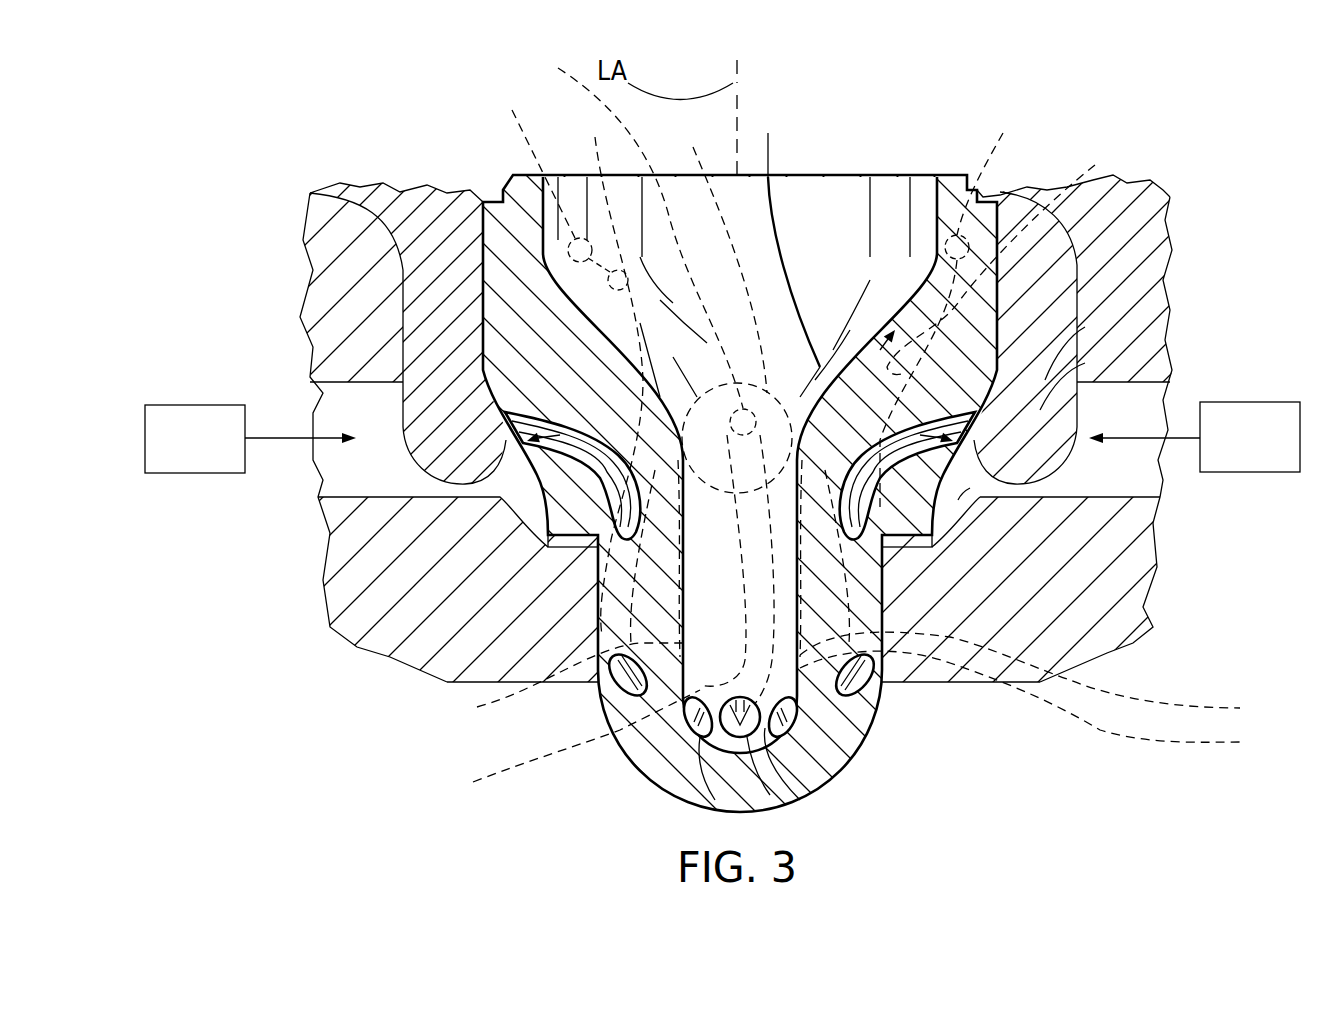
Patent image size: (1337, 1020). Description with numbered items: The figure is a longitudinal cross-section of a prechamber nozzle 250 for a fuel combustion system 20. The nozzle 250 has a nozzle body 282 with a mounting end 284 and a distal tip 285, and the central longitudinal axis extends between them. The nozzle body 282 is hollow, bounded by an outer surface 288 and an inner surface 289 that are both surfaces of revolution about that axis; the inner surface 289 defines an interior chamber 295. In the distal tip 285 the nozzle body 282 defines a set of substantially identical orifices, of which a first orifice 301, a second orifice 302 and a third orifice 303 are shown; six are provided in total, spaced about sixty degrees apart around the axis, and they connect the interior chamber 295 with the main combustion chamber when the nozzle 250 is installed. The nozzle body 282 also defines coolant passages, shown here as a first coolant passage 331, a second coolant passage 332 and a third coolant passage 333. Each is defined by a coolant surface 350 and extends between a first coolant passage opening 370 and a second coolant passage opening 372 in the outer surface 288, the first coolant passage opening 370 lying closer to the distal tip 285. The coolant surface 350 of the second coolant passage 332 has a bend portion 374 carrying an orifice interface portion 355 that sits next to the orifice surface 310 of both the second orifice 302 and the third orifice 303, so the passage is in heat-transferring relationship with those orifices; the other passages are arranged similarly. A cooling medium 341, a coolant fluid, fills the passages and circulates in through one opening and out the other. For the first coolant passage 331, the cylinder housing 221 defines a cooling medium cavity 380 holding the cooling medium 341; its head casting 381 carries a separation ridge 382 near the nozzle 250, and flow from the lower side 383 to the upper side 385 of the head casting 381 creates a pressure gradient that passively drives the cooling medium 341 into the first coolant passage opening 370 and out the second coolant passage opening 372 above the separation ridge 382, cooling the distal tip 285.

The fuel combustion system 20 is at (313, 165).
The nozzle 250 is at (517, 175).
The nozzle body 282 is at (517, 305).
The mounting end 284 is at (945, 175).
The cylinder housing 221 is at (1147, 282).
The inner surface 289 is at (765, 236).
The interior chamber 295 is at (706, 569).
The third coolant passage 333 is at (520, 433).
The cooling medium cavity 380 is at (965, 492).
The head casting 381 is at (1085, 327).
The separation ridge 382 is at (1085, 363).
The lower side 383 is at (970, 488).
The first coolant passage opening 370 is at (1247, 583).
The second coolant passage opening 372 is at (756, 299).
The coolant surface 350 is at (1228, 238).
The second coolant passage 332 is at (731, 305).
The upper side 385 is at (1029, 188).
The first coolant passage 331 is at (1000, 345).
The cooling medium 341 is at (196, 447).
The bend portion 374 is at (640, 700).
The orifice interface portion 355 is at (856, 726).
The orifice surface 310 is at (680, 735).
The third orifice 303 is at (715, 733).
The second orifice 302 is at (748, 725).
The first orifice 301 is at (818, 800).
The outer surface 288 is at (820, 805).
The distal tip 285 is at (720, 762).